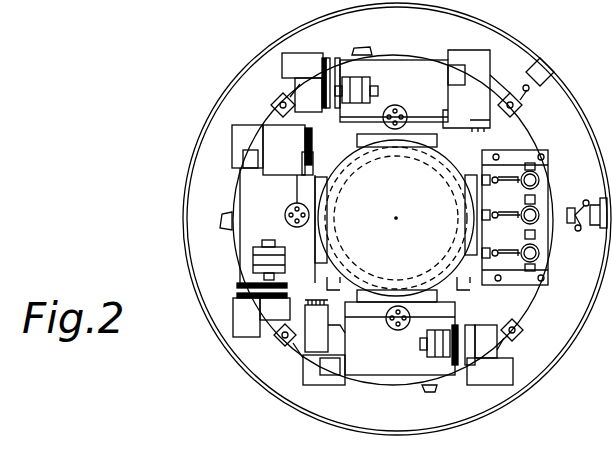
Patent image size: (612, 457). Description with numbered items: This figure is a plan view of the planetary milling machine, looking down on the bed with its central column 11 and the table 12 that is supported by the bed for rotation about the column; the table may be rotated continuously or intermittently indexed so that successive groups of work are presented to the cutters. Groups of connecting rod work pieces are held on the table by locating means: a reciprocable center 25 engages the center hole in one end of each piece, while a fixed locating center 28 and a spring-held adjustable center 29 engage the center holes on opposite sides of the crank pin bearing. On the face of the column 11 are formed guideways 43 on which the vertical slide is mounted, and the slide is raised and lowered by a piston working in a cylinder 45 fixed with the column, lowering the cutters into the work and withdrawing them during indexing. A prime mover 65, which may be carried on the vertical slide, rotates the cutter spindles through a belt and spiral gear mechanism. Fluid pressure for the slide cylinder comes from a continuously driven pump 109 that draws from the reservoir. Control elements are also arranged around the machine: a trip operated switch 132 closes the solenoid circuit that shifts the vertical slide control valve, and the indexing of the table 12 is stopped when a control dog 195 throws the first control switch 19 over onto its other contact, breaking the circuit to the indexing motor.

The central column 11 is at (447, 164).
The table 12 is at (545, 128).
The first control switch 19 is at (594, 232).
The reciprocable center 25 is at (491, 216).
The fixed locating center 28 is at (522, 217).
The adjustable center 29 is at (522, 172).
The guideways 43 is at (372, 147).
The cylinder 45 is at (403, 110).
The prime mover 65 is at (406, 355).
The pump 109 is at (447, 162).
The trip operated switch 132 is at (541, 88).
The control dog 195 is at (365, 47).